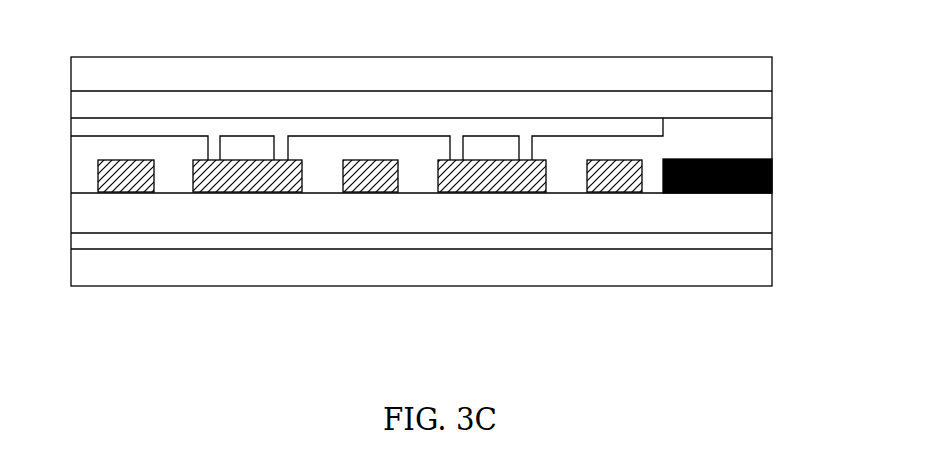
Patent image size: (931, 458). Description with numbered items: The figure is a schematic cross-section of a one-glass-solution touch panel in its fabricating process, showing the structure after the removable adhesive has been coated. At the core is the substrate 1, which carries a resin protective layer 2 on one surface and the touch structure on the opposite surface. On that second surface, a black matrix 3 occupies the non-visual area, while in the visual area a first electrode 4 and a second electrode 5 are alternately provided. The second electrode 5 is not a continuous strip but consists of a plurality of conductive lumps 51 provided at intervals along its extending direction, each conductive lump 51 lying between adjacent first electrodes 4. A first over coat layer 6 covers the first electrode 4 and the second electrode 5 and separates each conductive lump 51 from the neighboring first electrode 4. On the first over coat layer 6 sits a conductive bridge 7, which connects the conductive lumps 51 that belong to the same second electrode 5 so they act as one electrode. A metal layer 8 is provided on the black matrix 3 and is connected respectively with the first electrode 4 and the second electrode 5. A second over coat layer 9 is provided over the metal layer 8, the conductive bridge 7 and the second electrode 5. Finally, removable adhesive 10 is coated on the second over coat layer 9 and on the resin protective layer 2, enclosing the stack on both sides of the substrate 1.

The substrate 1 is at (772, 207).
The resin protective layer 2 is at (772, 240).
The black matrix 3 is at (772, 170).
The first electrode 4 is at (127, 172).
The second electrode 5 is at (316, 337).
The conductive lump 51 is at (278, 185).
The first over coat layer 6 is at (423, 150).
The conductive bridge 7 is at (560, 127).
The metal layer 8 is at (772, 128).
The second over coat layer 9 is at (772, 97).
The removable adhesive 10 is at (772, 52).